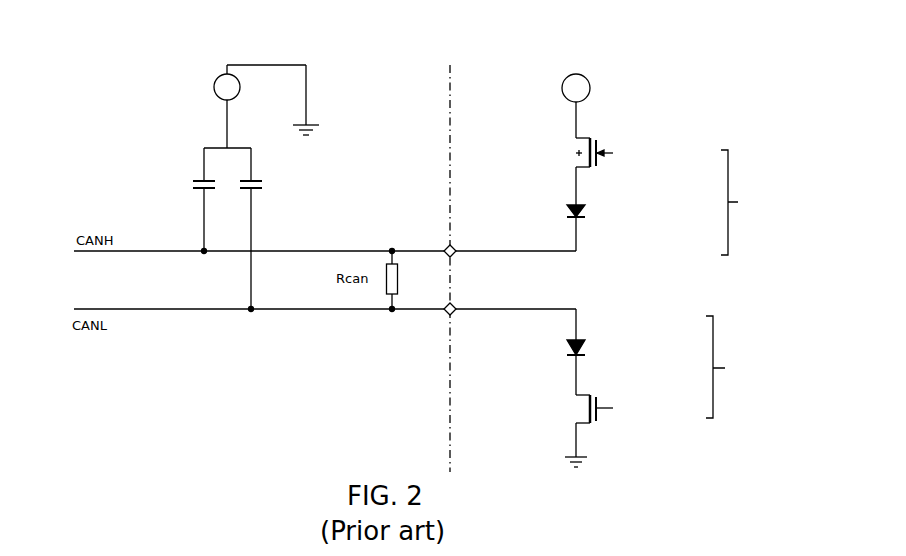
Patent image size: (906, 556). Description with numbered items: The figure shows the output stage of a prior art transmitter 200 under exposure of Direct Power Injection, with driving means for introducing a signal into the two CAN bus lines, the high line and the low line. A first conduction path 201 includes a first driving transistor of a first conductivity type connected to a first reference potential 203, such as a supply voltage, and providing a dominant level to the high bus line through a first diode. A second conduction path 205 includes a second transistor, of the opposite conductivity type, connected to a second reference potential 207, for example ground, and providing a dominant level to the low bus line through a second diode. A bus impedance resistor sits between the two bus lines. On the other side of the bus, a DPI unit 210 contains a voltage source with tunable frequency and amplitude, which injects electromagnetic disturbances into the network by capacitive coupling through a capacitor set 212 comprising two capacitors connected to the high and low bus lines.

The transmitter 200 is at (628, 58).
The first conduction path 201 is at (636, 178).
The first reference potential 203 is at (563, 80).
The second conduction path 205 is at (671, 383).
The second reference potential 207 is at (563, 462).
The DPI unit 210 is at (242, 188).
The capacitor set 212 is at (172, 168).